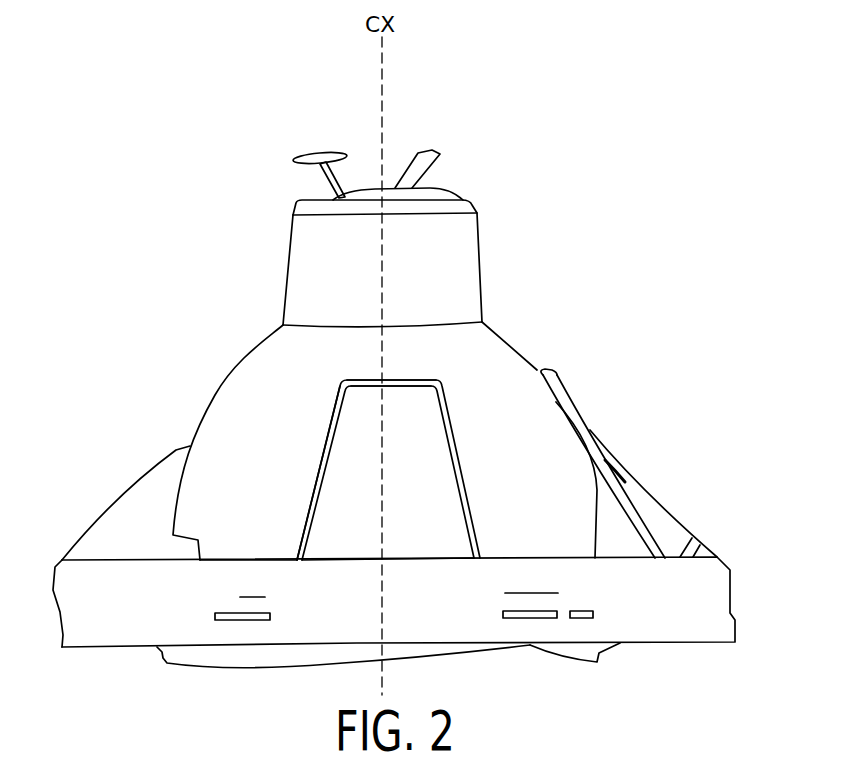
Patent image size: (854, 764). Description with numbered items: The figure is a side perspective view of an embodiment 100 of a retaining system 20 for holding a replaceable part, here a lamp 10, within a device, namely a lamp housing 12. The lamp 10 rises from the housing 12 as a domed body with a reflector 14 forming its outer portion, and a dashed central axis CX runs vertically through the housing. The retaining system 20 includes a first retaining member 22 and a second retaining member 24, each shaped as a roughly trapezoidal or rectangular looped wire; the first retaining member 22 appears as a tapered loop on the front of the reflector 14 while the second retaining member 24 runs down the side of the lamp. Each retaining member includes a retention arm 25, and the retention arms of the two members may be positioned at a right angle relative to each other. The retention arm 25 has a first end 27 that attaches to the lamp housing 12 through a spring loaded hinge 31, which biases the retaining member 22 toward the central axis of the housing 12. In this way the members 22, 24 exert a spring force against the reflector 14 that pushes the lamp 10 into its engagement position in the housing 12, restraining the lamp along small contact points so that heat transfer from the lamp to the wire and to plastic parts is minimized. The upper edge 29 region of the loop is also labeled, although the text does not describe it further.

The embodiment 100 is at (578, 259).
The lamp 10 is at (556, 461).
The lamp housing 12 is at (718, 593).
The reflector 14 is at (541, 402).
The retaining system 20 is at (382, 401).
The first retaining member 22 is at (459, 465).
The second retaining member 24 is at (633, 497).
The retention arm 25 is at (334, 408).
The first end 27 is at (456, 553).
The top edge 29 is at (360, 380).
The spring loaded hinge 31 is at (247, 558).